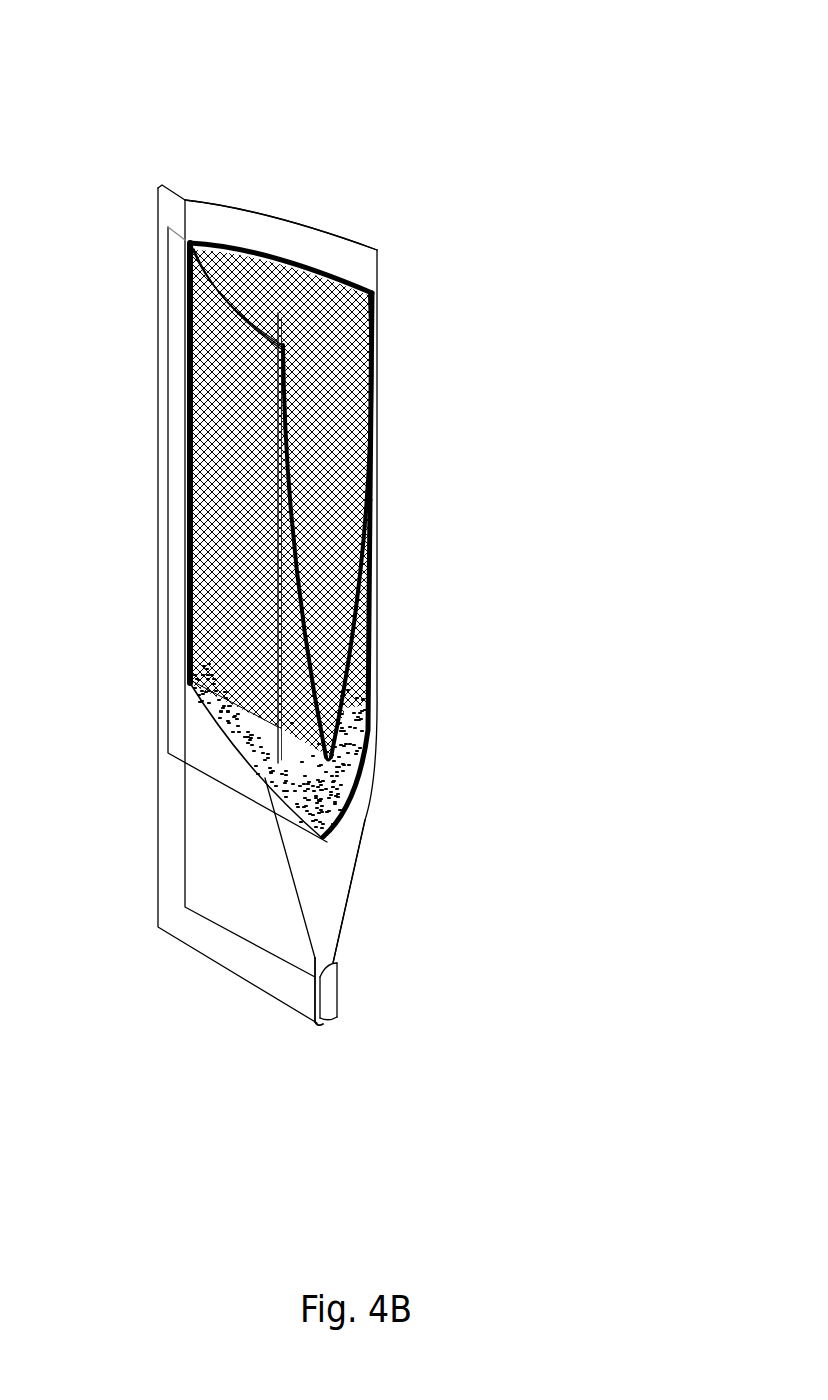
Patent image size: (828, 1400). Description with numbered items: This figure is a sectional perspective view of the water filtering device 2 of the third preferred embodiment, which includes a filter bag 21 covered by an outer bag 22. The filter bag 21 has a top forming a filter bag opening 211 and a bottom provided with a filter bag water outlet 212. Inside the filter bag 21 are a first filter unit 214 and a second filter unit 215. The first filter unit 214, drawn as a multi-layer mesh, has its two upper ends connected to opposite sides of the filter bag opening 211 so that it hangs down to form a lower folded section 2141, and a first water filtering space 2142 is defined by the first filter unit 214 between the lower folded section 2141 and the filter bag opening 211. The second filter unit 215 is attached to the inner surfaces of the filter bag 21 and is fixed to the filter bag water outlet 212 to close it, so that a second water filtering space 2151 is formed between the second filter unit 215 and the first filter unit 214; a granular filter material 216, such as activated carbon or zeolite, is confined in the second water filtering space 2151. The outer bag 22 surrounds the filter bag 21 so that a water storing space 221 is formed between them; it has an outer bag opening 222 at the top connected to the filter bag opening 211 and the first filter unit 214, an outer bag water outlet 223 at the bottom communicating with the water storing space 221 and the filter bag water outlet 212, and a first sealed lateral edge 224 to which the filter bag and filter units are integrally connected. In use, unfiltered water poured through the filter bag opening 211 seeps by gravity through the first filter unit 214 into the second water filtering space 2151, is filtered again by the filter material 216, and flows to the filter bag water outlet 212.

The water filtering device 2 is at (686, 21).
The filter bag 21 is at (187, 247).
The filter bag opening 211 is at (263, 250).
The filter bag water outlet 212 is at (262, 768).
The first filter unit 214 is at (380, 313).
The lower folded section 2141 is at (347, 760).
The first water filtering space 2142 is at (377, 347).
The second filter unit 215 is at (352, 797).
The second water filtering space 2151 is at (357, 652).
The filter material 216 is at (372, 695).
The outer bag 22 is at (183, 198).
The water storing space 221 is at (323, 897).
The outer bag opening 222 is at (223, 203).
The outer bag water outlet 223 is at (330, 1003).
The first sealed lateral edge 224 is at (172, 217).